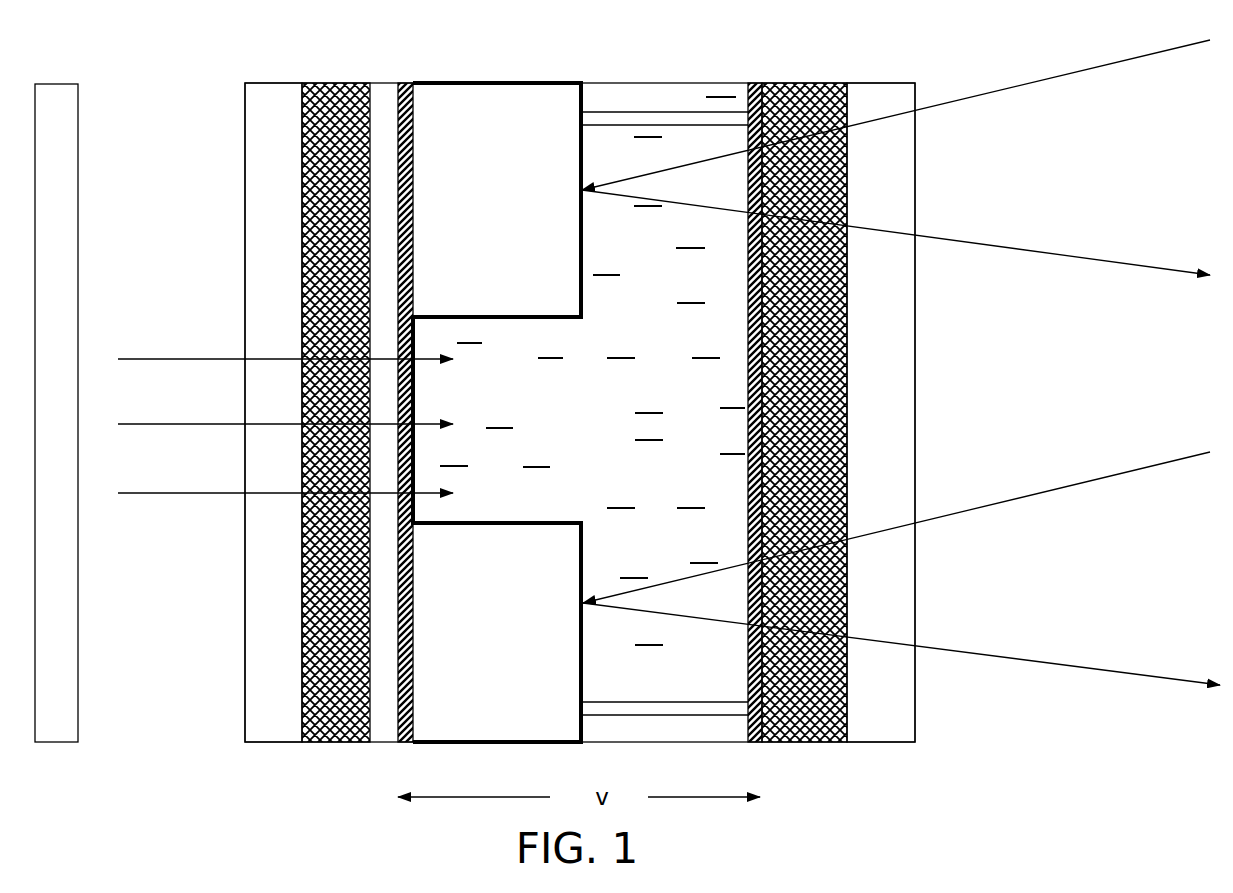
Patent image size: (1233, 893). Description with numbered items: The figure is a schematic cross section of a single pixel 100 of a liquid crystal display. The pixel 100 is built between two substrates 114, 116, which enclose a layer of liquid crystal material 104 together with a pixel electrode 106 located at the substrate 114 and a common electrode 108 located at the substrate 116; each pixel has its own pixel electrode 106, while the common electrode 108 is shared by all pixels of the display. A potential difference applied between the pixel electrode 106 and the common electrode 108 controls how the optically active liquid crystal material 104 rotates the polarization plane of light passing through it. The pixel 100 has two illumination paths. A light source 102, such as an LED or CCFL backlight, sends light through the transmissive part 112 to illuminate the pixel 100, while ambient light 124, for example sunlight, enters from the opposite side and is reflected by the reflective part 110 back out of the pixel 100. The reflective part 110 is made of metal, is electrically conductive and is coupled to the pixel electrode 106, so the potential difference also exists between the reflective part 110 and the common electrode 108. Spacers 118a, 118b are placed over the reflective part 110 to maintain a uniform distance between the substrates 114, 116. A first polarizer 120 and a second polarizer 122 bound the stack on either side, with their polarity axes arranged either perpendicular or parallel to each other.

The pixel 100 is at (90, 825).
The light source 102 is at (55, 743).
The liquid crystal material 104 is at (678, 97).
The pixel electrode 106 is at (405, 743).
The common electrode 108 is at (755, 743).
The reflective part 110 is at (483, 262).
The transmissive part 112 is at (413, 410).
The substrate 114 is at (357, 82).
The substrate 116 is at (790, 82).
The spacer 118a is at (678, 117).
The spacer 118b is at (648, 708).
The first polarizer 120 is at (287, 83).
The second polarizer 122 is at (875, 82).
The ambient light 124 is at (1037, 83).